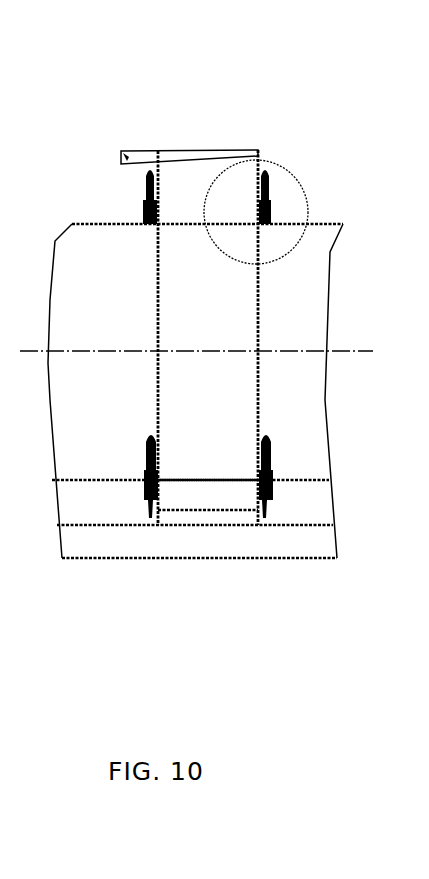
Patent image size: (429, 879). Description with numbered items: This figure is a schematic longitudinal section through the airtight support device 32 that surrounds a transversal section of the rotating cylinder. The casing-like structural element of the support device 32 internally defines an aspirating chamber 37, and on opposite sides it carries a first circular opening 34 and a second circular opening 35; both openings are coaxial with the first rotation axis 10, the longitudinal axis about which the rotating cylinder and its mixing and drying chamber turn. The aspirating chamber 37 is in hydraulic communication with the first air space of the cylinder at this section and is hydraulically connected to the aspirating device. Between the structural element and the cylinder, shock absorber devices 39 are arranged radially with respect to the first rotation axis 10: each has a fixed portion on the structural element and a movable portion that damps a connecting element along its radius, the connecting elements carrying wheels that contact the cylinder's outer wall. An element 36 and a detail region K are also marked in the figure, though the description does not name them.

The first rotation axis 10 is at (352, 352).
The airtight support device 32 is at (175, 128).
The first circular opening 34 is at (87, 338).
The second circular opening 35 is at (336, 337).
The lower cross member 36 is at (156, 524).
The aspirating chamber 37 is at (171, 210).
The shock absorber device 39 is at (284, 538).
The detail region K is at (305, 185).